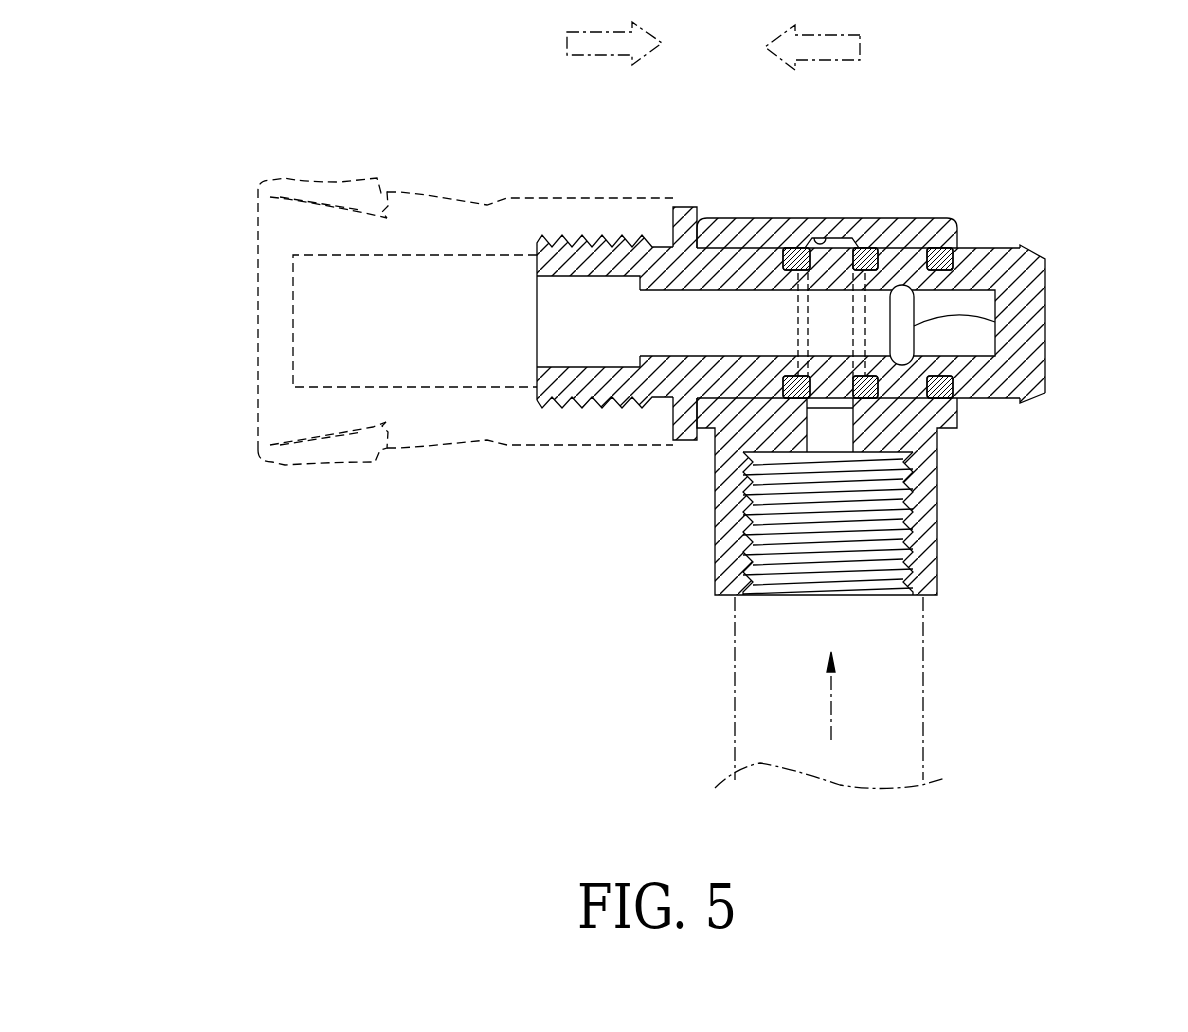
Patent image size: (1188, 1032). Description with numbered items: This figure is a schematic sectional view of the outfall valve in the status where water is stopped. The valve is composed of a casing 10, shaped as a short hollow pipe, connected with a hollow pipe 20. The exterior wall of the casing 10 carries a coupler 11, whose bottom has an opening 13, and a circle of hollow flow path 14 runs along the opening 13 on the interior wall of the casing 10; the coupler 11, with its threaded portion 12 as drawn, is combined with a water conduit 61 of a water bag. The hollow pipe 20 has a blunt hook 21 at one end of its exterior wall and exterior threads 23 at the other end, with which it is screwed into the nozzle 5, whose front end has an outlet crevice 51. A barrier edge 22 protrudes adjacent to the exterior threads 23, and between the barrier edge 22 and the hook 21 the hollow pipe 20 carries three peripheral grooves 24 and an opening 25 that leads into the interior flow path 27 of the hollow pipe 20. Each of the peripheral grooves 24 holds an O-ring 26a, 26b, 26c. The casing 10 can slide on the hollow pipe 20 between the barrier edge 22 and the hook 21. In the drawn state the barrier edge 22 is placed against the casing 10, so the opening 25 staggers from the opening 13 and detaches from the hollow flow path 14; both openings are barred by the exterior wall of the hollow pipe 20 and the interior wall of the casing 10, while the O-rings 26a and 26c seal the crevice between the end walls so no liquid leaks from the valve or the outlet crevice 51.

The nozzle 5 is at (428, 218).
The outlet crevice 51 is at (292, 320).
The exterior threads 23 is at (592, 312).
The interior flow path 27 is at (583, 348).
The barrier edge 22 is at (692, 210).
The hollow pipe 20 is at (886, 276).
The blunt hook 21 is at (1028, 248).
The peripheral grooves 24 is at (1025, 395).
The opening 25 is at (992, 322).
The casing 10 is at (801, 372).
The hollow flow path 14 is at (815, 237).
The coupler 11 is at (716, 530).
The internal thread 12 is at (716, 583).
The opening 13 is at (833, 437).
The O-ring 26a is at (785, 250).
The O-ring 26b is at (870, 248).
The O-ring 26c is at (947, 250).
The water conduit 61 is at (923, 706).